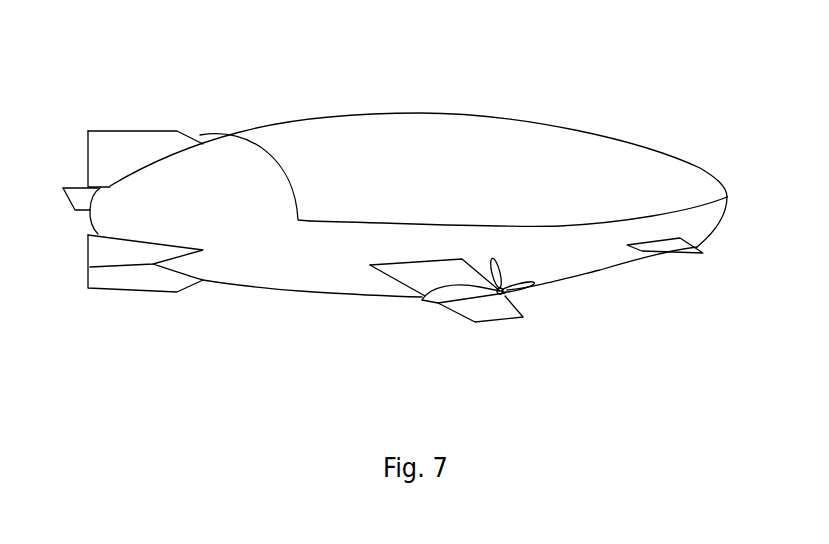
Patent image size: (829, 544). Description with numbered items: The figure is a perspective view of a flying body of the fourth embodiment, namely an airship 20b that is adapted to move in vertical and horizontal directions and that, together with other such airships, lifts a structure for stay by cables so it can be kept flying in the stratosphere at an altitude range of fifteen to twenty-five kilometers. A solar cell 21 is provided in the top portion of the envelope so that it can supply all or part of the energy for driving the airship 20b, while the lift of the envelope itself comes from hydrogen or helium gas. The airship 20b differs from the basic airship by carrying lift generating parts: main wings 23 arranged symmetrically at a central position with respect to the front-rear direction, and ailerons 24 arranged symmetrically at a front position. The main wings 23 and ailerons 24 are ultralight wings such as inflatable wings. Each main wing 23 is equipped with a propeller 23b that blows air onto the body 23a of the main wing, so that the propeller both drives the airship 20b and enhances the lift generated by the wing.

The airship 20b is at (630, 85).
The solar cell 21 is at (468, 113).
The main wing 23 is at (445, 320).
The body of the main wing 23a is at (493, 308).
The propeller 23b is at (530, 287).
The aileron 24 is at (670, 252).